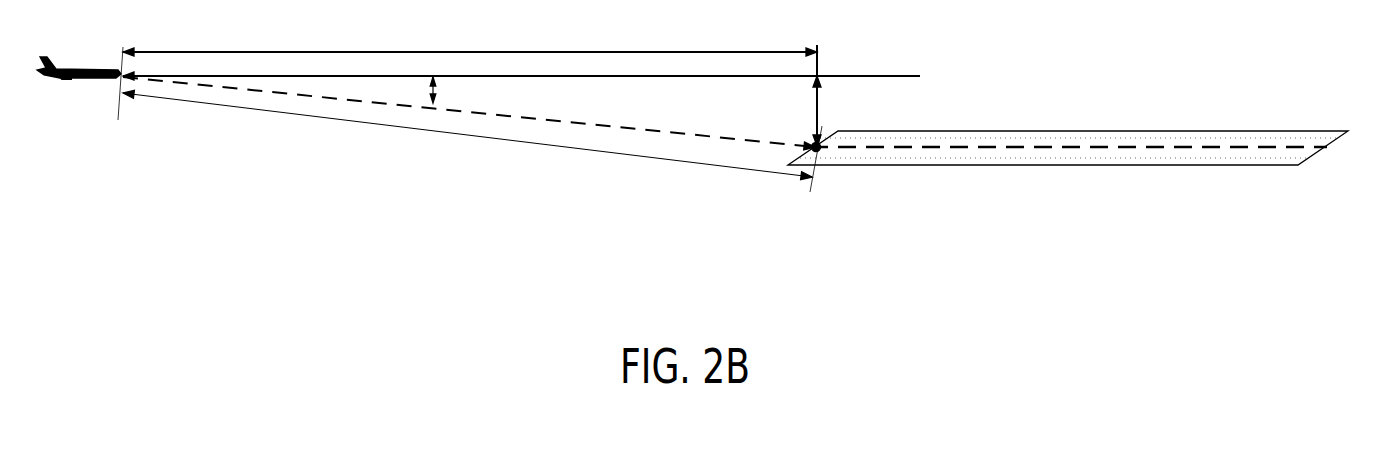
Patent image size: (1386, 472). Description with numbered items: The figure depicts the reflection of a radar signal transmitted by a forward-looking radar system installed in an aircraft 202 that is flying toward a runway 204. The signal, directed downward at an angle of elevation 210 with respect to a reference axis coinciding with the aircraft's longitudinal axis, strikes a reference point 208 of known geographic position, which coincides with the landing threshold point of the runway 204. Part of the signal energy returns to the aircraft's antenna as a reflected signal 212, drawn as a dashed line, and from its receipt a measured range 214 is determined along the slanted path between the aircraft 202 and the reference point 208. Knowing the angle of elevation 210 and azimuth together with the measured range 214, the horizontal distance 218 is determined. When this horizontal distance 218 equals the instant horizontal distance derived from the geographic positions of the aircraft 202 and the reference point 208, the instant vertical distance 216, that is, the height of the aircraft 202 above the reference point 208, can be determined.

The aircraft 202 is at (79, 104).
The runway 204 is at (1135, 133).
The reference point 208 is at (831, 164).
The angle of elevation 210 is at (565, 92).
The reflected signal 212 is at (262, 98).
The measured range 214 is at (467, 137).
The vertical distance 216 is at (936, 97).
The horizontal distance 218 is at (470, 37).